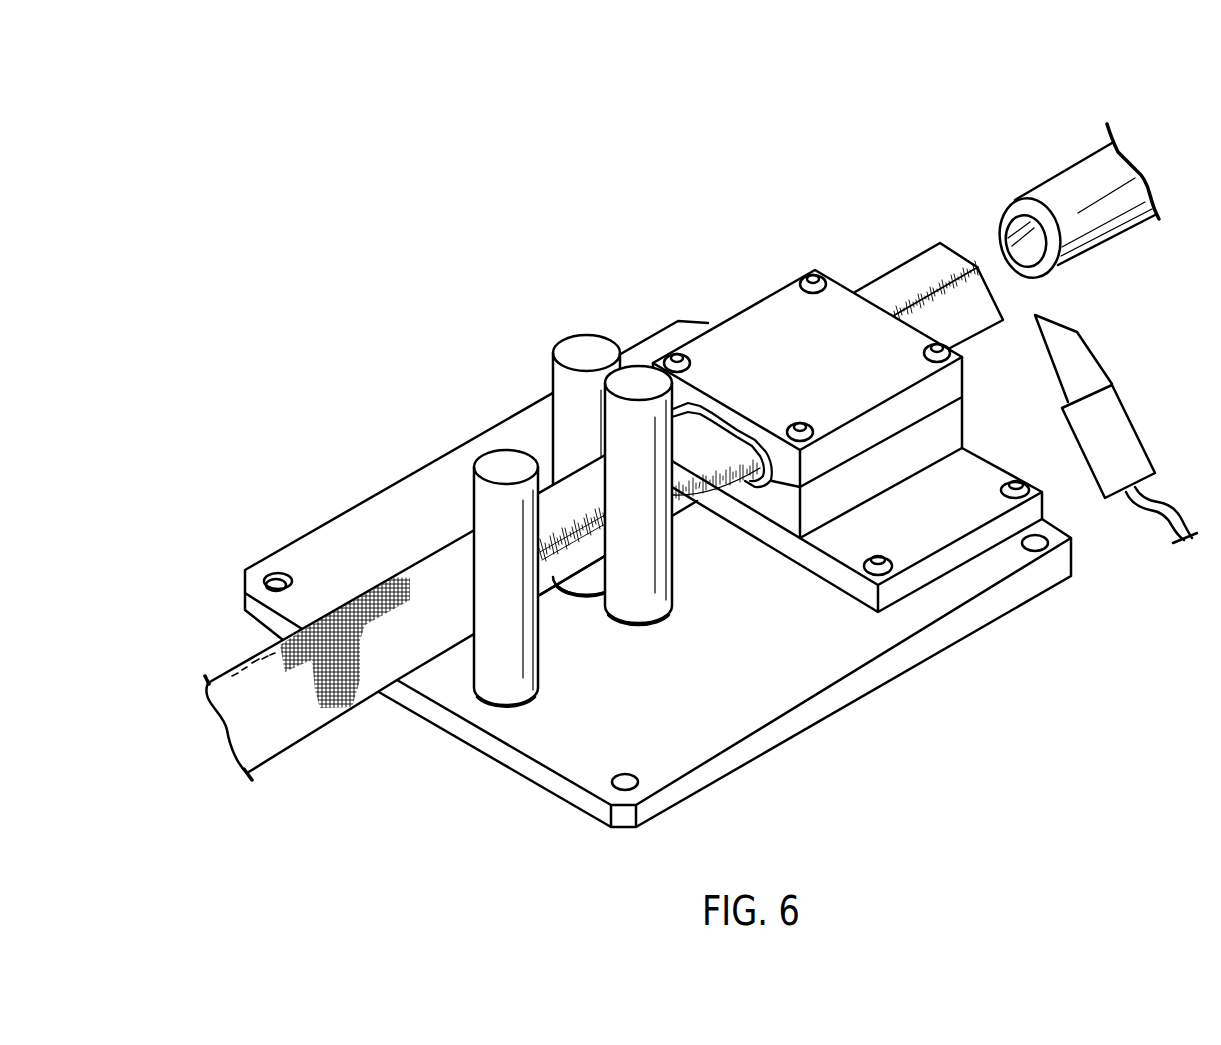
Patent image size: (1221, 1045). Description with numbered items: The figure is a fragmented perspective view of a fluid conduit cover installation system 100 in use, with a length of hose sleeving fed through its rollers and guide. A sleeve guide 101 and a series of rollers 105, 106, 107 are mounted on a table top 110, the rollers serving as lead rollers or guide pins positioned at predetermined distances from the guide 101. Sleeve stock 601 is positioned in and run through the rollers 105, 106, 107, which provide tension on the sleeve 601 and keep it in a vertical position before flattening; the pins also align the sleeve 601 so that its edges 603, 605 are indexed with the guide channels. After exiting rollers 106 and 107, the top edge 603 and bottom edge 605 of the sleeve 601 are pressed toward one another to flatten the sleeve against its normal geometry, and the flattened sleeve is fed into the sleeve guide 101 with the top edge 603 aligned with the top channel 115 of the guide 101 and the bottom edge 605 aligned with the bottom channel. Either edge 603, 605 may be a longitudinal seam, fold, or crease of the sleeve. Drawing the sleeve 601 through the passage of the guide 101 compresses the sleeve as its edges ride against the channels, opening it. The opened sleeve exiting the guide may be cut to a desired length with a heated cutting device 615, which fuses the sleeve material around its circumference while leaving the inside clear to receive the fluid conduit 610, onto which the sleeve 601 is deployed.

The fluid conduit cover installation system 100 is at (360, 420).
The sleeve guide 101 is at (757, 275).
The roller 105 is at (478, 665).
The roller 106 is at (615, 428).
The roller 107 is at (568, 342).
The table top 110 is at (805, 752).
The top guide channel 115 is at (682, 420).
The sleeve 601 is at (323, 752).
The top edge 603 is at (420, 568).
The bottom edge 605 is at (548, 590).
The fluid conduit 610 is at (1066, 183).
The heated cutting device 615 is at (1133, 372).